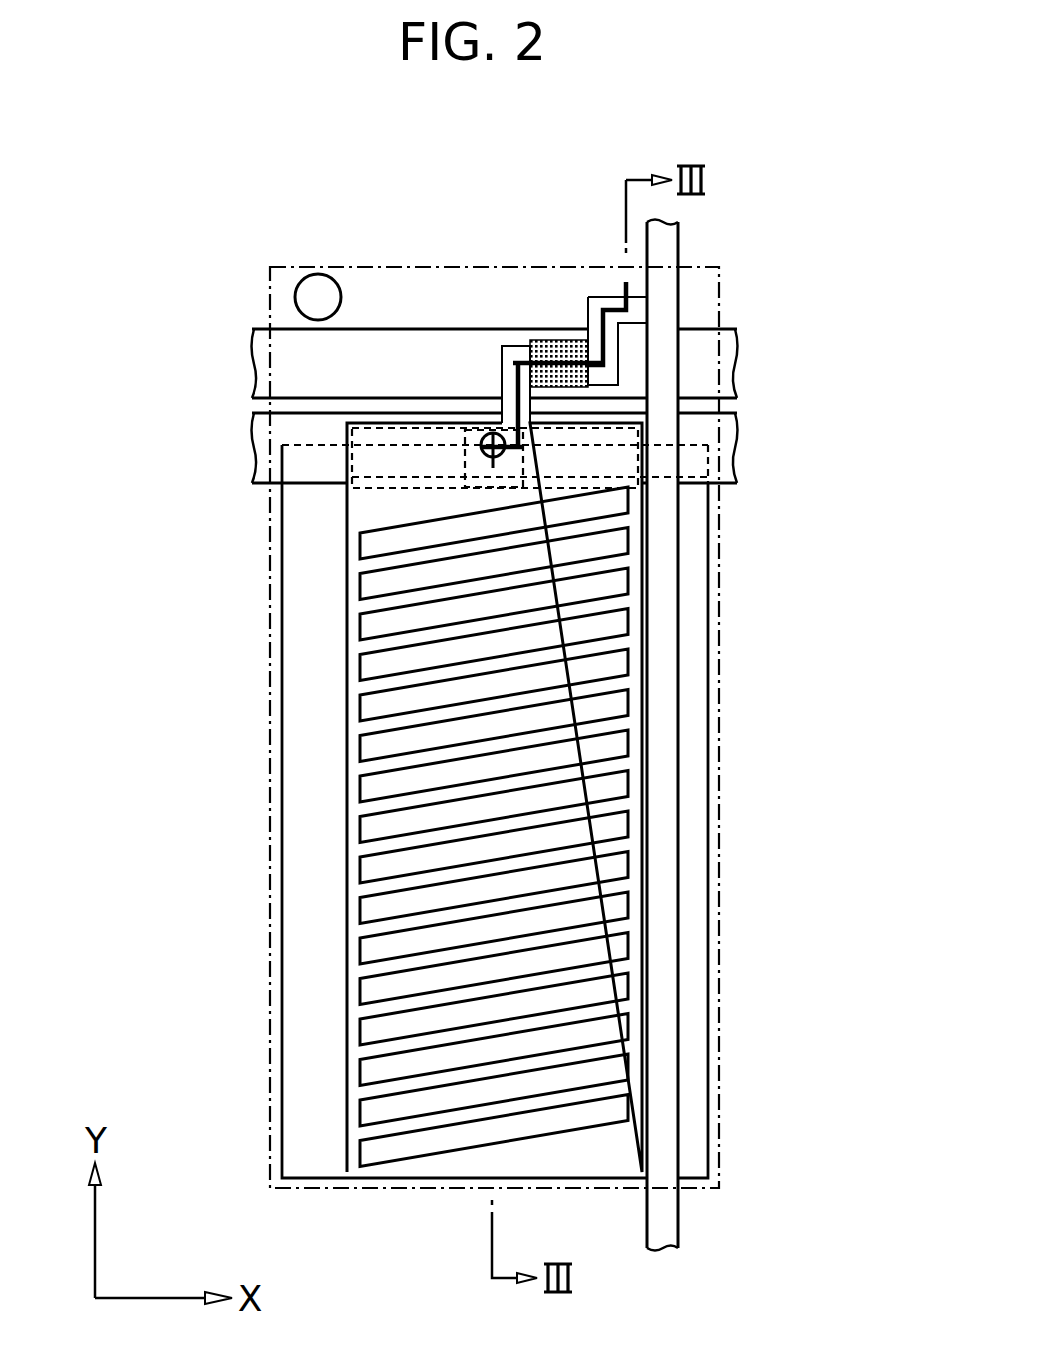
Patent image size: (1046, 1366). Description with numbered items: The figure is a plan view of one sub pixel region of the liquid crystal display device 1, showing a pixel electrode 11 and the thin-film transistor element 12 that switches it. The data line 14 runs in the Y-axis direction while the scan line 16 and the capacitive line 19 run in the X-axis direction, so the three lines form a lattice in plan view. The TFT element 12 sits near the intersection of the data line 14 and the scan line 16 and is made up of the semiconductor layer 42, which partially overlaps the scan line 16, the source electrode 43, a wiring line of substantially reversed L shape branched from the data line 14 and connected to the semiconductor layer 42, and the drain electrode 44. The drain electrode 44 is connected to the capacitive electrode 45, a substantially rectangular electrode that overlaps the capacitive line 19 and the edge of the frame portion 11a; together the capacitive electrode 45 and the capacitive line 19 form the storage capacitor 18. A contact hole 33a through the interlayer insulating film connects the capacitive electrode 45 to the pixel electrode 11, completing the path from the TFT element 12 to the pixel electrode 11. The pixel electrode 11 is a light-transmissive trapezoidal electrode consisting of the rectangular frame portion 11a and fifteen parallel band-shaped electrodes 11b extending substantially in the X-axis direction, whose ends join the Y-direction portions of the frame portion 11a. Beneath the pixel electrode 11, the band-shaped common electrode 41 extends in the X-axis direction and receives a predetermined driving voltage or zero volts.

The liquid crystal display device 1 is at (808, 160).
The thin-film transistor element 12 is at (453, 181).
The drain electrode 44 is at (501, 344).
The semiconductor layer 42 is at (546, 340).
The source electrode 43 is at (588, 316).
The contact hole 33a is at (484, 436).
The scan line 16 is at (256, 356).
The capacitive electrode 45 is at (352, 433).
The capacitive line 19 is at (258, 453).
The storage capacitor 18 is at (378, 496).
The pixel electrode 11 is at (150, 737).
The frame portion 11a is at (373, 522).
The band-shaped electrodes 11b is at (400, 806).
The common electrode 41 is at (300, 858).
The data line 14 is at (663, 1223).